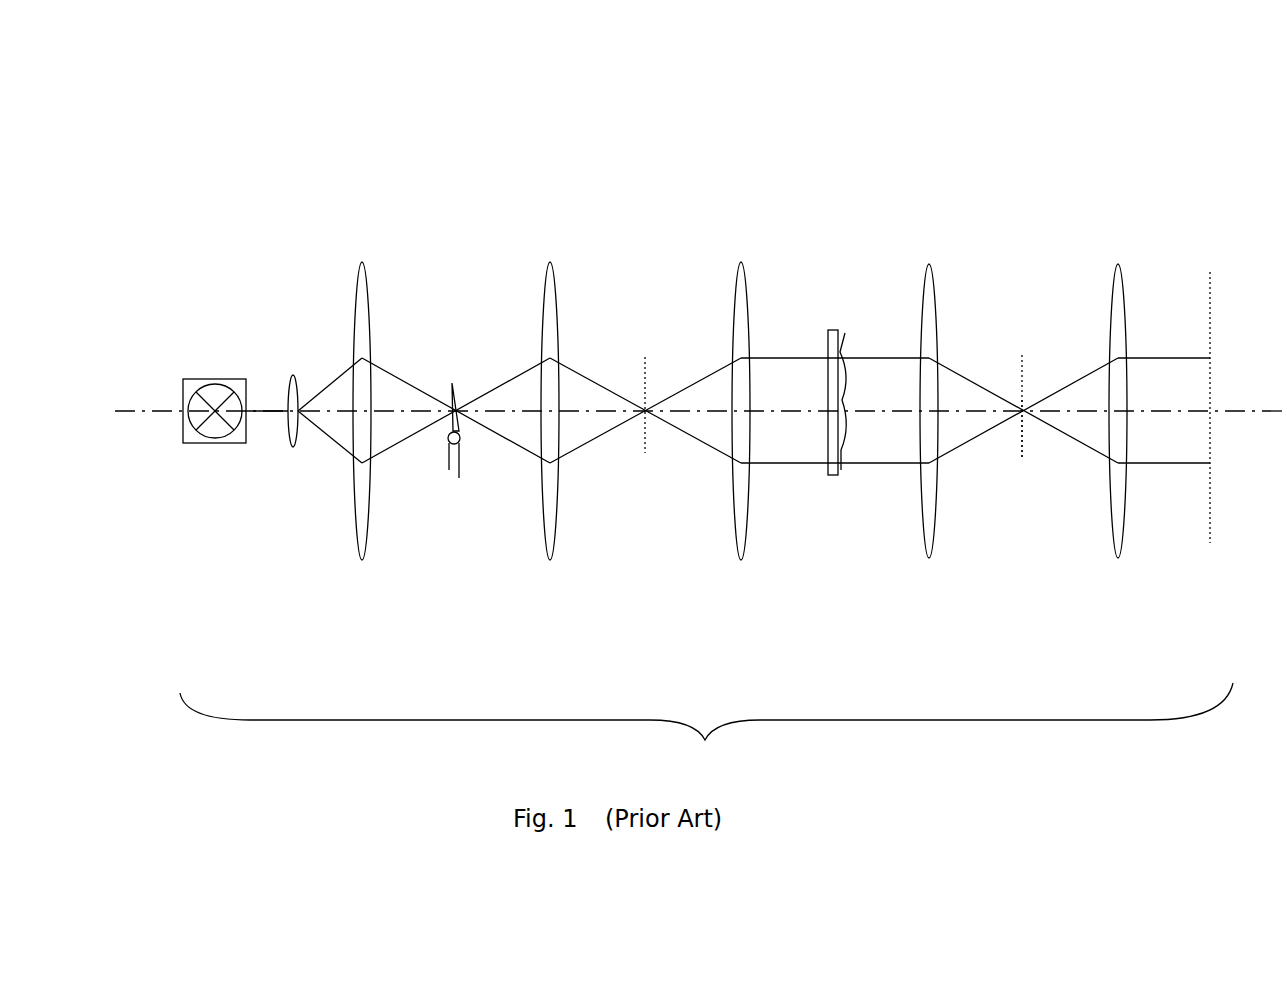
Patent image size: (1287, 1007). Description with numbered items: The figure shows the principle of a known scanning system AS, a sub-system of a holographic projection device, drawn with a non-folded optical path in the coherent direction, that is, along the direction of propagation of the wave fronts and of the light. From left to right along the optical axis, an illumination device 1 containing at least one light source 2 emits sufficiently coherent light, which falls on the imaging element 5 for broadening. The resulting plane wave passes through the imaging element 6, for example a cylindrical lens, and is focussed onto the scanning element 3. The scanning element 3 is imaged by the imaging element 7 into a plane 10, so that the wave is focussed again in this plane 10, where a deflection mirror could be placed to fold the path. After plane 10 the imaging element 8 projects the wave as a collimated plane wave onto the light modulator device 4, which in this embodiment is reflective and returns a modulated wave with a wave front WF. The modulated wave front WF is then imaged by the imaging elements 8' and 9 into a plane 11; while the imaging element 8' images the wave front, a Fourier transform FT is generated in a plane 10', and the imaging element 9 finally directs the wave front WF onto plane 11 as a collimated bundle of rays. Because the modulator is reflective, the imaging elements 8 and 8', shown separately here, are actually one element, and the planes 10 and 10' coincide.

The illumination device 1 is at (188, 379).
The light source 2 is at (222, 398).
The scanning element 3 is at (454, 467).
The light modulator device 4 is at (828, 475).
The imaging element 5 is at (296, 374).
The imaging element 6 is at (366, 270).
The imaging element 7 is at (554, 267).
The imaging element 8 is at (779, 325).
The imaging element 8' is at (967, 326).
The imaging element 9 is at (1121, 265).
The plane 10 is at (621, 496).
The plane 10' is at (988, 519).
The plane 11 is at (1209, 527).
The Fourier transform FT is at (1022, 389).
The wave front WF is at (840, 475).
The scanning system AS is at (706, 736).